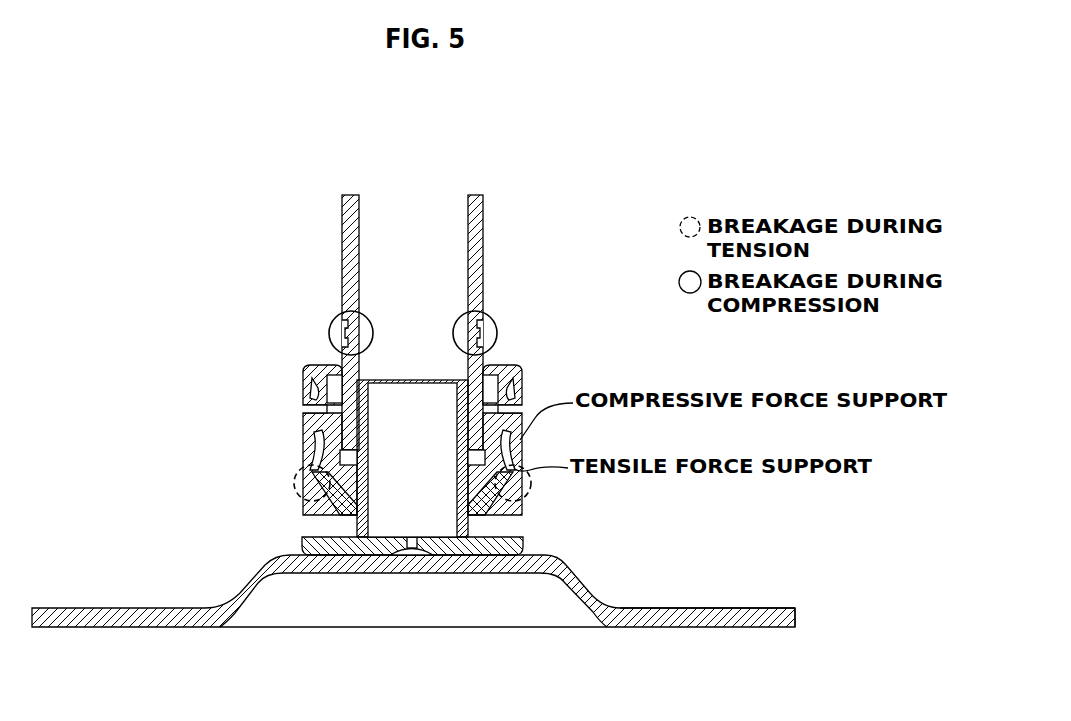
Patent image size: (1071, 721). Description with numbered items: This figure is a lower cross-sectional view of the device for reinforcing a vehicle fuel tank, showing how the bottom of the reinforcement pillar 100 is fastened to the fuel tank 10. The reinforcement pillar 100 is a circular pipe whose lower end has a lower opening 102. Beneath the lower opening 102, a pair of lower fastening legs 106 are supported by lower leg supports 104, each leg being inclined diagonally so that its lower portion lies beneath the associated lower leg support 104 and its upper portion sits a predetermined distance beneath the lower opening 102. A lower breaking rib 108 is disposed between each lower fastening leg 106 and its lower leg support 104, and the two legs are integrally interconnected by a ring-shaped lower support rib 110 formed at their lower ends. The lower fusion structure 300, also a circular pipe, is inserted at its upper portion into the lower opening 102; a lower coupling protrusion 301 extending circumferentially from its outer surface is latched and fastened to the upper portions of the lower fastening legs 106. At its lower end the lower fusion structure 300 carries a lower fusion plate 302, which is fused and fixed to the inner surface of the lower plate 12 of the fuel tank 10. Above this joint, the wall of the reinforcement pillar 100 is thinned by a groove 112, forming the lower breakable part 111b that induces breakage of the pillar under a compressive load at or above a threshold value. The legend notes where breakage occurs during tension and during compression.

The reinforcement pillar 100 is at (484, 227).
The groove 112 is at (330, 343).
The lower breakable part 111b is at (496, 340).
The lower opening 102 is at (320, 410).
The lower leg support 104 is at (317, 435).
The lower breaking rib 108 is at (303, 482).
The lower support rib 110 is at (302, 515).
The lower fastening leg 106 is at (527, 483).
The lower coupling protrusion 301 is at (510, 448).
The lower fusion plate 302 is at (523, 548).
The lower fusion structure 300 is at (338, 556).
The fuel tank 10 is at (708, 602).
The lower plate 12 is at (763, 614).